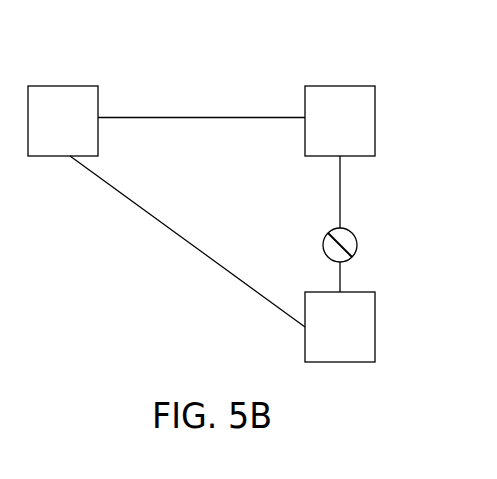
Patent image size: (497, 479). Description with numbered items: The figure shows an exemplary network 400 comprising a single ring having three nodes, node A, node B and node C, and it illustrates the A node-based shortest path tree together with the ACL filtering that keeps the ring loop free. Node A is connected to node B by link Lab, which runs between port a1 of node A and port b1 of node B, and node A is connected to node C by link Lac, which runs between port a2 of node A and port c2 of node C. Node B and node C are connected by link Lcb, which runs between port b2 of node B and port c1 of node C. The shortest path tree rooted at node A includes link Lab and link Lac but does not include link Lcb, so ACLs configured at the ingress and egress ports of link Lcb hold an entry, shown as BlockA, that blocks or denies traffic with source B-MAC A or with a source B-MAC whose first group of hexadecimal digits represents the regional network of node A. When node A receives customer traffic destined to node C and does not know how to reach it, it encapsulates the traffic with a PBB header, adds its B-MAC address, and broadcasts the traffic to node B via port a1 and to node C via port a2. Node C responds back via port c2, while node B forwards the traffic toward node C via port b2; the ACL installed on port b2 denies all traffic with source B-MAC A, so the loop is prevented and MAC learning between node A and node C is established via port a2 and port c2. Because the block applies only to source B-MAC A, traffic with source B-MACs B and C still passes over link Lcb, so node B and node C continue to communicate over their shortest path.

The network 400 is at (209, 54).
The node A is at (63, 121).
The node B is at (340, 121).
The node C is at (340, 327).
The link Lab is at (201, 104).
The link Lac is at (187, 241).
The link Lcb is at (356, 224).
The ACL entry blocking source B-MAC A BlockA is at (372, 245).
The port a1 is at (116, 101).
The port a2 is at (58, 175).
The port b1 is at (287, 101).
The port b2 is at (355, 173).
The port c1 is at (353, 280).
The port c2 is at (280, 340).